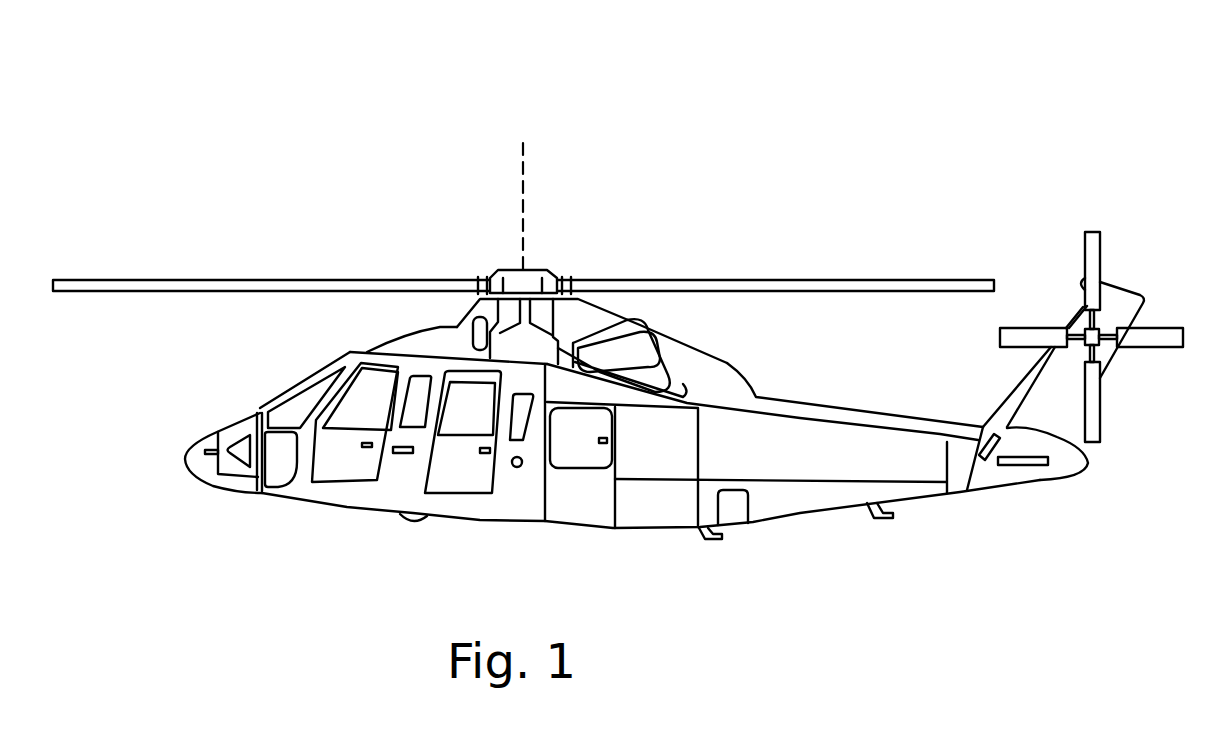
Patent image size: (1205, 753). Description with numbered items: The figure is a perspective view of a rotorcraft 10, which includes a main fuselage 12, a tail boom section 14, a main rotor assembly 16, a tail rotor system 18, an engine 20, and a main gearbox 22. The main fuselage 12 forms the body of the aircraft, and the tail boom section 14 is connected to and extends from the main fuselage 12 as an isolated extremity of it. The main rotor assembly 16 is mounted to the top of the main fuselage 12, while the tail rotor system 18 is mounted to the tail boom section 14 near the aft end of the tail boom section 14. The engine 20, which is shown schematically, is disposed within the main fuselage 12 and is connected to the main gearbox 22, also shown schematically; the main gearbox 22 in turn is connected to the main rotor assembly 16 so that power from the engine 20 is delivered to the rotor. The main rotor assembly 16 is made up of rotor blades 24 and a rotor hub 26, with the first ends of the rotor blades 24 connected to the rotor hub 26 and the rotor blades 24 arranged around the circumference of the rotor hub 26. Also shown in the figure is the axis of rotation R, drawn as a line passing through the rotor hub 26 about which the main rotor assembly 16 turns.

The rotorcraft 10 is at (324, 131).
The main fuselage 12 is at (320, 493).
The tail boom section 14 is at (810, 497).
The main rotor assembly 16 is at (508, 269).
The tail rotor system 18 is at (1105, 267).
The engine 20 is at (630, 363).
The main gearbox 22 is at (520, 341).
The rotor blades 24 is at (703, 280).
The rotor hub 26 is at (532, 270).
The axis of rotation R is at (527, 177).